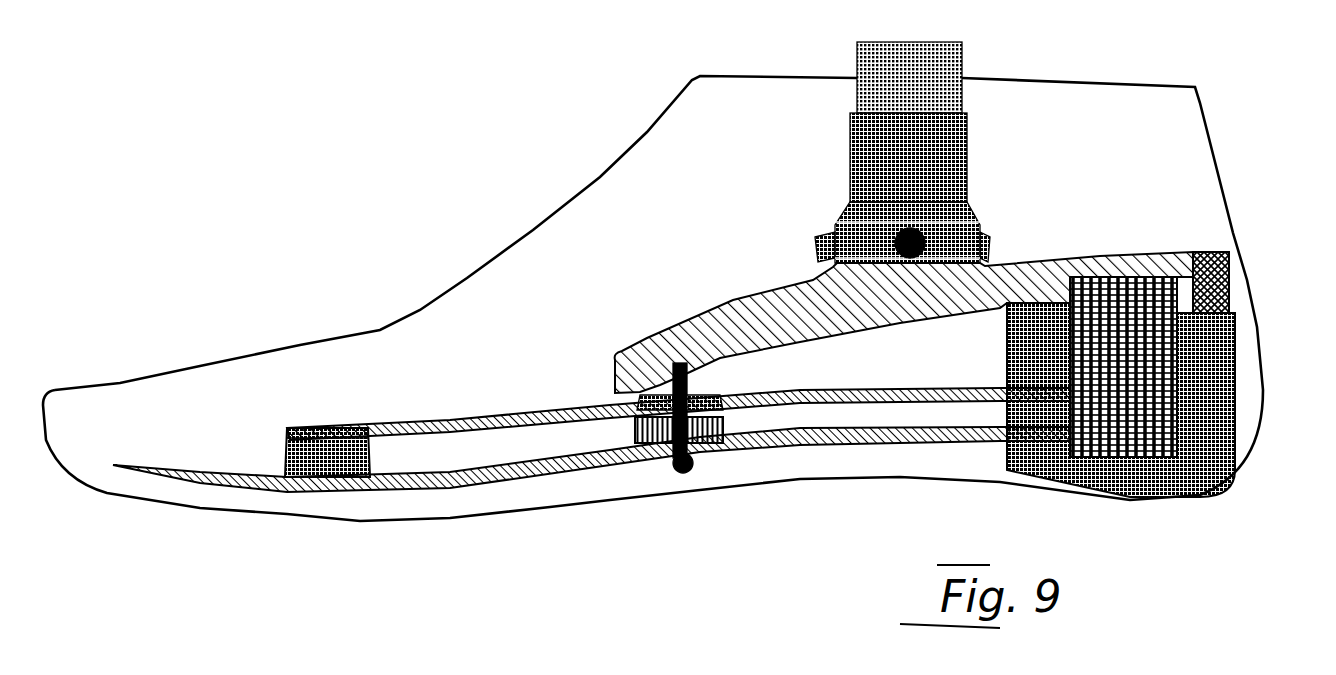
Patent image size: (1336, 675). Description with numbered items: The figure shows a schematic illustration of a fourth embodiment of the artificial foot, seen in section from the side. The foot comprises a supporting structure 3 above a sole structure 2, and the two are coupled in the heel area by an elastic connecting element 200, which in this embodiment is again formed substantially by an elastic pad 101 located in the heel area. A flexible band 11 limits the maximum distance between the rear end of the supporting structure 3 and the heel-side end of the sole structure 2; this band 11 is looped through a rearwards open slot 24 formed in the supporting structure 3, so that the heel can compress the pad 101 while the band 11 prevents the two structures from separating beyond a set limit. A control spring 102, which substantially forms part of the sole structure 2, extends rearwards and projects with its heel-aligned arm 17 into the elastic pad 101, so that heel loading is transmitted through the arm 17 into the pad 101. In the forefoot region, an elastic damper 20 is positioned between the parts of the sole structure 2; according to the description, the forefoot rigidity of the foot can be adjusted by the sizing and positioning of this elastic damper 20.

The sole structure 2 is at (910, 450).
The supporting structure 3 is at (733, 305).
The flexible band 11 is at (1237, 378).
The heel-aligned arm 17 is at (908, 386).
The elastic damper 20 is at (332, 425).
The rearwards open slot 24 is at (1192, 250).
The elastic pad 101 is at (1237, 350).
The control spring 102 is at (830, 384).
The elastic connecting element 200 is at (1250, 322).